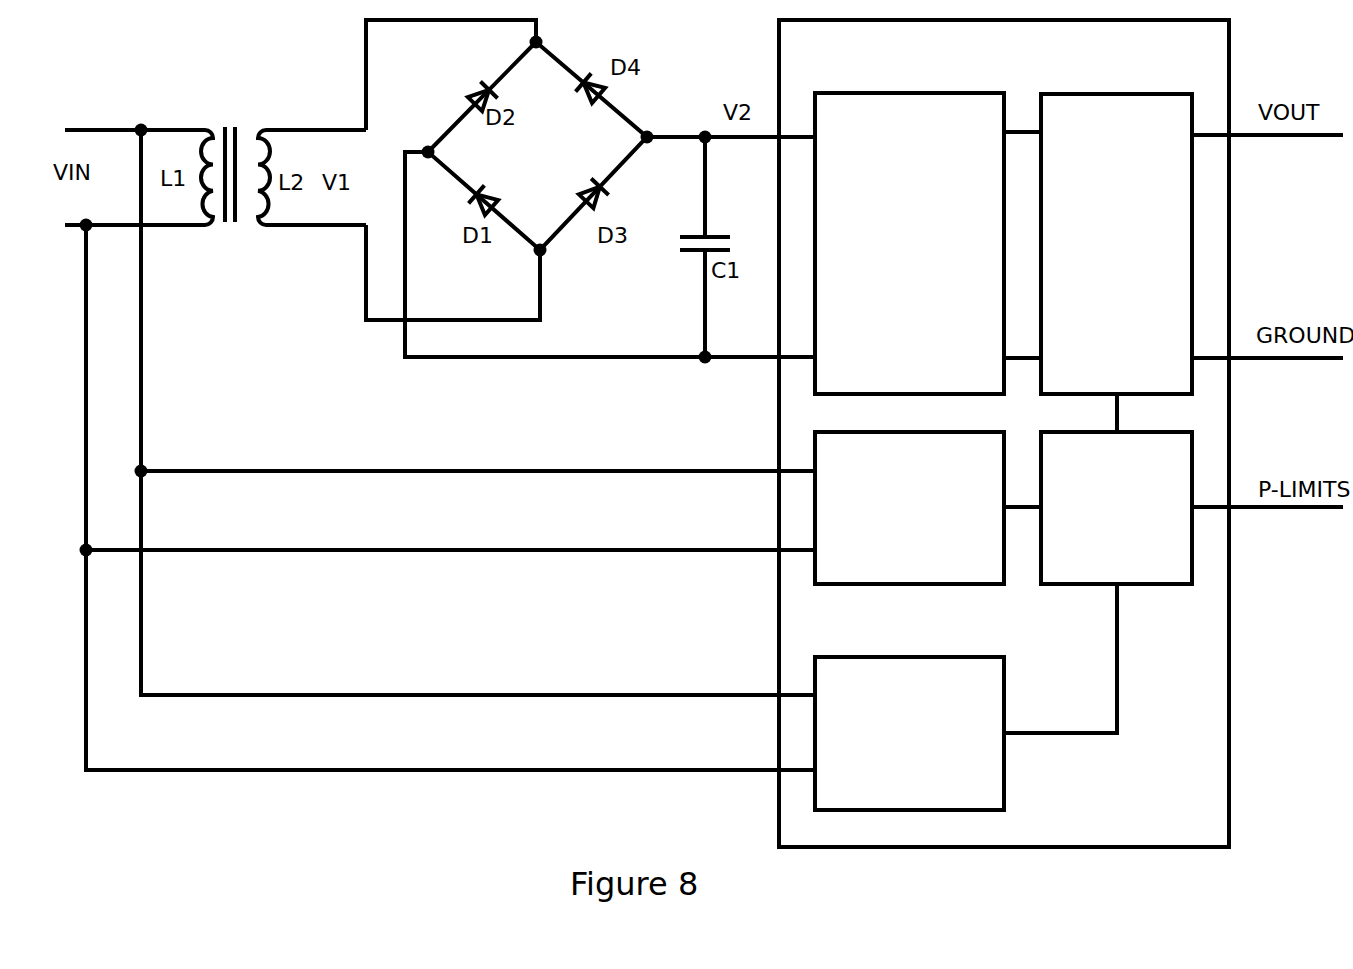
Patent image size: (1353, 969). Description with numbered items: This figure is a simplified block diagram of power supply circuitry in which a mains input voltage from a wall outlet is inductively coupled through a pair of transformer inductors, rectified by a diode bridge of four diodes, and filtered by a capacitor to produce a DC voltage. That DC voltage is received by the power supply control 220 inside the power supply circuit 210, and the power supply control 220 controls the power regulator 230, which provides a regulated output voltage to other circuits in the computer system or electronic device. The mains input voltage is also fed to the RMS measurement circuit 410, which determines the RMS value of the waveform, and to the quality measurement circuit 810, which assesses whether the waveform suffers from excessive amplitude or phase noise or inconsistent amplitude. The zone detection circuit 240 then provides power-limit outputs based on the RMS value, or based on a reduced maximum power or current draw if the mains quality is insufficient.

The power supply circuit 210 is at (1004, 433).
The power supply control 220 is at (909, 243).
The power regulator 230 is at (1116, 244).
The zone detection circuit 240 is at (1116, 508).
The RMS measurement circuit 410 is at (909, 508).
The quality measurement circuit 810 is at (909, 733).